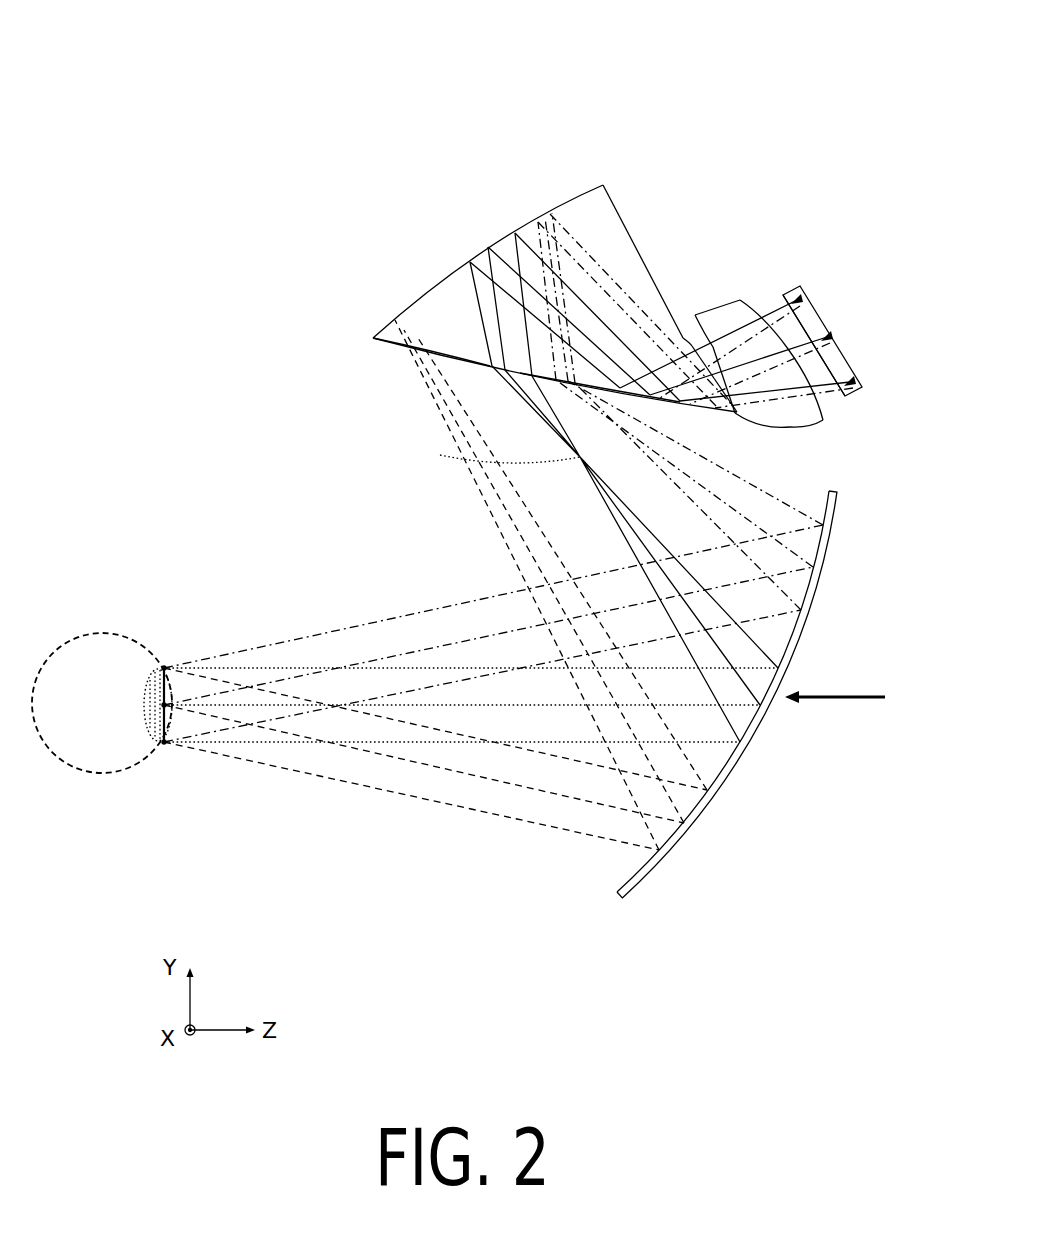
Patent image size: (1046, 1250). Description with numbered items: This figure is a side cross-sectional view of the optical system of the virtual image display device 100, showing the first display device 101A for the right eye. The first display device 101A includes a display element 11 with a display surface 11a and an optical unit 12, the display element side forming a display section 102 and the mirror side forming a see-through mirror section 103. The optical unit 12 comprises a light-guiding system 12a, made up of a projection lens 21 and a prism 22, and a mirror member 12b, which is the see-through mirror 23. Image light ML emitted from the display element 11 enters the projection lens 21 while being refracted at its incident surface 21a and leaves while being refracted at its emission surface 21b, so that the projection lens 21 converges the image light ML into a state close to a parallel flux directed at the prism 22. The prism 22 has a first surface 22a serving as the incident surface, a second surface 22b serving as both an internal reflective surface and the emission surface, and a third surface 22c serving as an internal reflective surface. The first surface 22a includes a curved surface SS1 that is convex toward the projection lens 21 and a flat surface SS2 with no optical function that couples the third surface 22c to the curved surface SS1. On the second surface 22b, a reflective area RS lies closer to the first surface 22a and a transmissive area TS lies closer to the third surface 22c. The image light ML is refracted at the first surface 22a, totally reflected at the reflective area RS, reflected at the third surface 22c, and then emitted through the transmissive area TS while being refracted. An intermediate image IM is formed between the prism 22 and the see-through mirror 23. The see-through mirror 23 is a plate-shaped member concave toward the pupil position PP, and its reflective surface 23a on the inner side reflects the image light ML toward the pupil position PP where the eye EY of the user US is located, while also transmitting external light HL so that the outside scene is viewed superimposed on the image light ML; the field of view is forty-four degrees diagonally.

The virtual image display device 100 is at (462, 100).
The first display device 101A is at (468, 483).
The display section 102 is at (627, 138).
The see-through mirror section 103 is at (776, 890).
The optical unit 12 is at (228, 186).
The light-guiding system 12a is at (393, 251).
The mirror member 12b is at (762, 810).
The display element 11 is at (812, 316).
The display surface 11a is at (784, 300).
The projection lens 21 is at (738, 322).
The incident surface 21a is at (813, 385).
The emission surface 21b is at (773, 408).
The prism 22 is at (557, 222).
The first surface 22a is at (691, 340).
The second surface 22b is at (560, 390).
The third surface 22c is at (512, 236).
The see-through mirror 23 is at (755, 725).
The reflective surface 23a is at (736, 742).
The curved surface SS1 is at (740, 409).
The flat surface SS2 is at (652, 280).
The transmissive area TS is at (455, 358).
The reflective area RS is at (567, 382).
The image light ML is at (513, 541).
The intermediate image IM is at (422, 470).
The external light HL is at (842, 690).
The eye EY is at (106, 752).
The user US is at (102, 749).
The pupil position PP is at (160, 748).